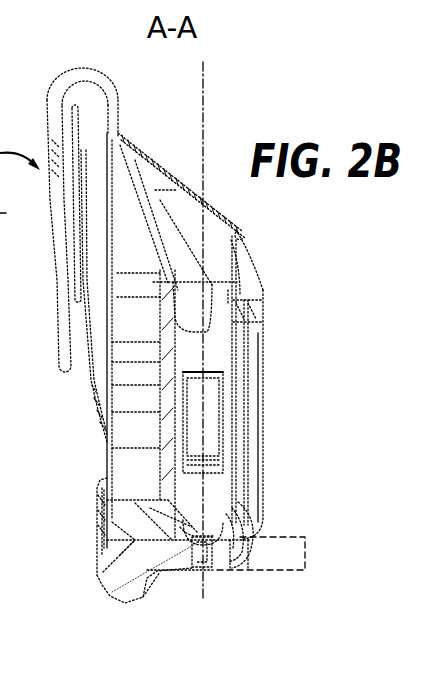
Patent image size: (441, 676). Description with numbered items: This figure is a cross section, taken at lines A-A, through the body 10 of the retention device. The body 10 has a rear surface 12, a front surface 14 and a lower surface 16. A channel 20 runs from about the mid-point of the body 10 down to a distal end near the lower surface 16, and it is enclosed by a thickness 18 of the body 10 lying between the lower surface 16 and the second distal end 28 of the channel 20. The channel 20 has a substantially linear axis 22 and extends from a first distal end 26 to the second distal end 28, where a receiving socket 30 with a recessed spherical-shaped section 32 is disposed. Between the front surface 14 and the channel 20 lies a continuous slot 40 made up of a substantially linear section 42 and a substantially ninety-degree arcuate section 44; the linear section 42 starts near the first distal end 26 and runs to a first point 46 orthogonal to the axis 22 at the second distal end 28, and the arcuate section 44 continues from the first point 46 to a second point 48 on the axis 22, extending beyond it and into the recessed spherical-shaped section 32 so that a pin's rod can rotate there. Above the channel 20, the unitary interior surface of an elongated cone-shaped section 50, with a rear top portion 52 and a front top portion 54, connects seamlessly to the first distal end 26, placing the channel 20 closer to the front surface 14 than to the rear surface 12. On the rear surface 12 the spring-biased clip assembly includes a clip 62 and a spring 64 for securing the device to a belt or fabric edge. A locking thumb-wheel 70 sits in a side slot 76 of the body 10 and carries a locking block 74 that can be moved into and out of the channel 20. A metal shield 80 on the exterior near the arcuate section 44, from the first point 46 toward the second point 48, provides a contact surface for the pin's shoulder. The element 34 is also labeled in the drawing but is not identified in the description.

The body 10 is at (100, 576).
The rear surface 12 is at (98, 540).
The front surface 14 is at (263, 317).
The lower surface 16 is at (187, 570).
The thickness 18 is at (305, 548).
The channel 20 is at (210, 357).
The substantially linear axis 22 is at (203, 62).
The first distal end 26 is at (228, 296).
The second distal end 28 is at (245, 503).
The receiving socket 30 is at (207, 513).
The recessed spherical-shaped section 32 is at (190, 517).
The latch ramp 34 is at (155, 521).
The continuous slot 40 is at (247, 365).
The substantially linear section 42 is at (247, 388).
The substantially 90-degree arcuate section 44 is at (252, 526).
The first point 46 is at (247, 519).
The second point 48 is at (200, 568).
The elongated cone-shaped section 50 is at (182, 257).
The rear top portion 52 is at (120, 137).
The front top portion 54 is at (238, 233).
The clip 62 is at (66, 296).
The spring 64 is at (95, 404).
The locking thumb-wheel 70 is at (213, 410).
The locking block 74 is at (208, 428).
The side slot 76 is at (213, 465).
The metal shield 80 is at (258, 529).